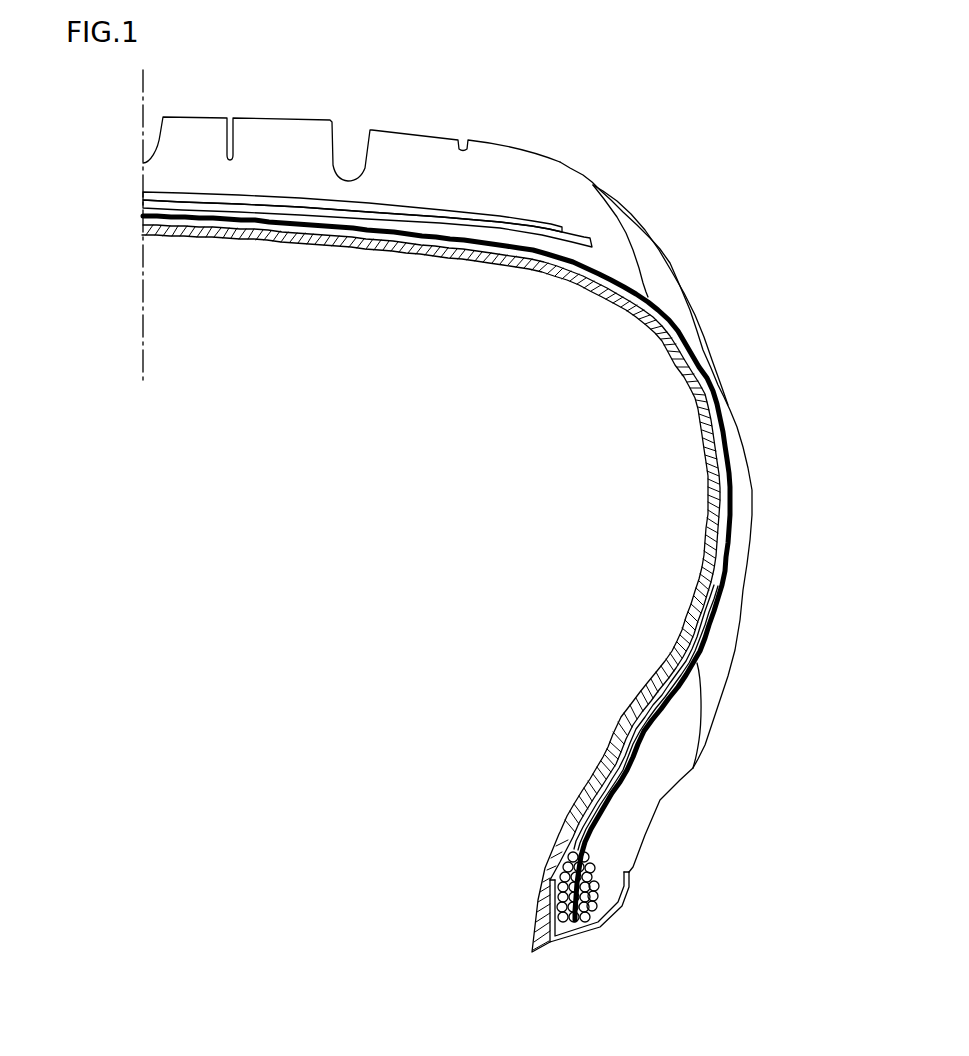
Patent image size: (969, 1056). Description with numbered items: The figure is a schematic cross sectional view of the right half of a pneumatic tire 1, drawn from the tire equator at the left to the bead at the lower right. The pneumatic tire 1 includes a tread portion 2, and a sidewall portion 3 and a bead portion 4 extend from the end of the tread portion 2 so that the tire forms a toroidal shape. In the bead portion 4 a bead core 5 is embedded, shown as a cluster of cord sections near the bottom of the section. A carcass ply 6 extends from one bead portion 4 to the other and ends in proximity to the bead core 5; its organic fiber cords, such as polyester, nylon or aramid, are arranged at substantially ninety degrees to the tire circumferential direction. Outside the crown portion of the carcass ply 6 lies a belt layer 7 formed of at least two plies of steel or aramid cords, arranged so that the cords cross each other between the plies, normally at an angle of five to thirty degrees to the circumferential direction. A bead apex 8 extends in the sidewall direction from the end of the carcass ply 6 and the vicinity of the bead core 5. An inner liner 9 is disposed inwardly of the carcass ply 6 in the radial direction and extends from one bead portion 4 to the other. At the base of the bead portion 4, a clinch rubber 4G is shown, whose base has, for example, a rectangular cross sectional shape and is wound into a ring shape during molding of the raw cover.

The pneumatic tire 1 is at (281, 108).
The tread portion 2 is at (433, 129).
The sidewall portion 3 is at (751, 461).
The bead portion 4 is at (678, 784).
The clinch rubber 4G is at (630, 890).
The bead core 5 is at (596, 912).
The carcass ply 6 is at (712, 622).
The belt layer 7 is at (140, 189).
The bead apex 8 is at (603, 832).
The inner liner 9 is at (677, 655).